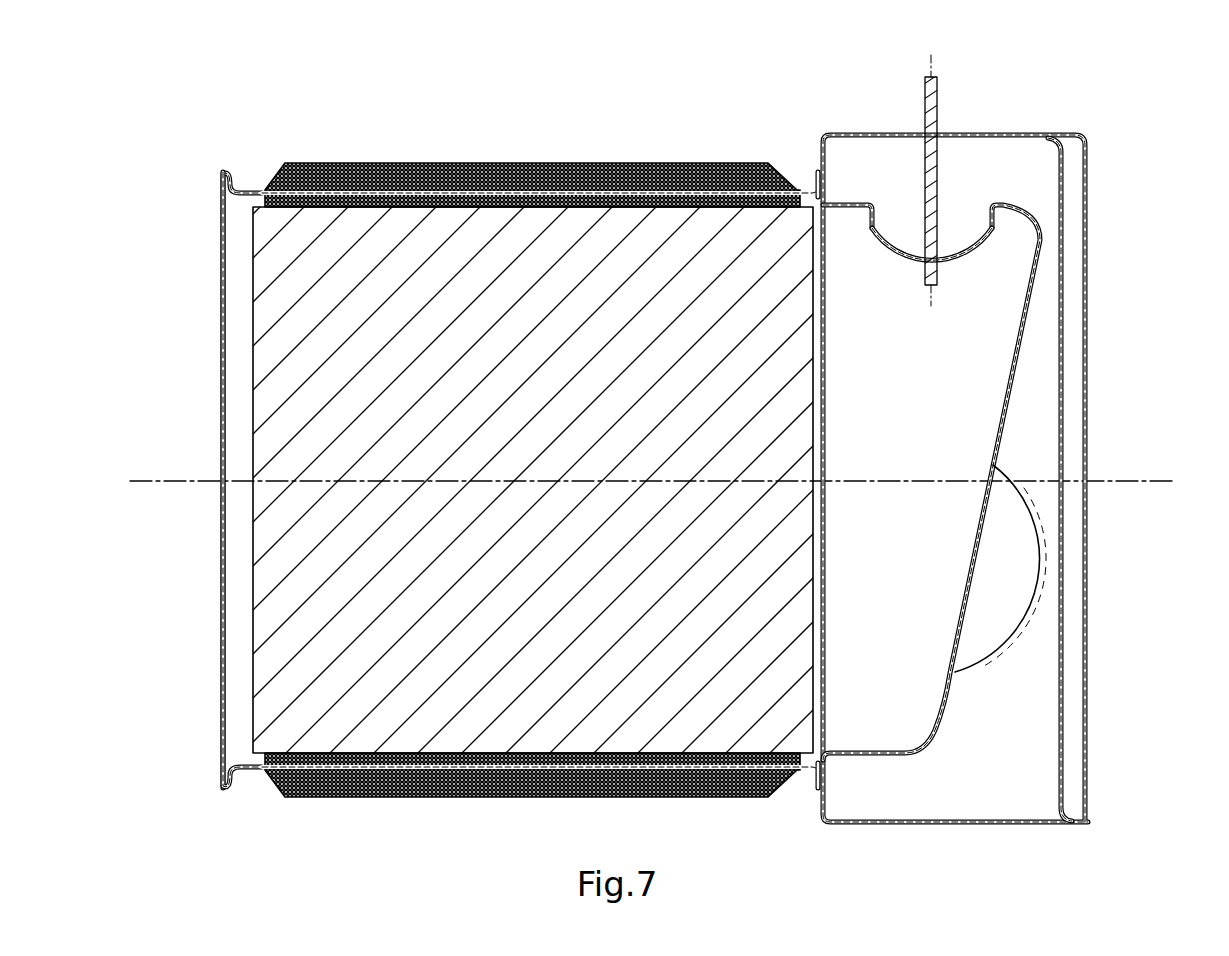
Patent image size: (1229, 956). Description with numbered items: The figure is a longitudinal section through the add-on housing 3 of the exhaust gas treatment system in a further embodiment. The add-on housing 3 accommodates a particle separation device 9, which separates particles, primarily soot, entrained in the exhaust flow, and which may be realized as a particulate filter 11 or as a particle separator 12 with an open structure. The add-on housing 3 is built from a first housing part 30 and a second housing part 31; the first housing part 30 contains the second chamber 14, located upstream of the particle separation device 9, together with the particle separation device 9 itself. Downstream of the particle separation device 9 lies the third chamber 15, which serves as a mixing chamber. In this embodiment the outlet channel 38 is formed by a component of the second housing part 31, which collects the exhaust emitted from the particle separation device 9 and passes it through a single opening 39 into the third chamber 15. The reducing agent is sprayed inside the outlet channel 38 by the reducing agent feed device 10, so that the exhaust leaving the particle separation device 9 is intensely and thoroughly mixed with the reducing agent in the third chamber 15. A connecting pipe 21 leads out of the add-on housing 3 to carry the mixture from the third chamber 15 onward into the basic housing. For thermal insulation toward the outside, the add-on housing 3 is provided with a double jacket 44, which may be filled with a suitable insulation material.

The add-on housing 3 is at (1118, 161).
The particle separation device 9 is at (614, 401).
The reducing agent feed device 10 is at (923, 185).
The particulate filter 11 is at (520, 267).
The particle separator 12 is at (450, 348).
The second chamber 14 is at (175, 326).
The third chamber 15 is at (970, 192).
The connecting pipe 21 is at (977, 591).
The first housing part 30 is at (337, 163).
The second housing part 31 is at (961, 133).
The outlet channel 38 is at (920, 434).
The single opening 39 is at (892, 254).
The double jacket 44 is at (533, 207).